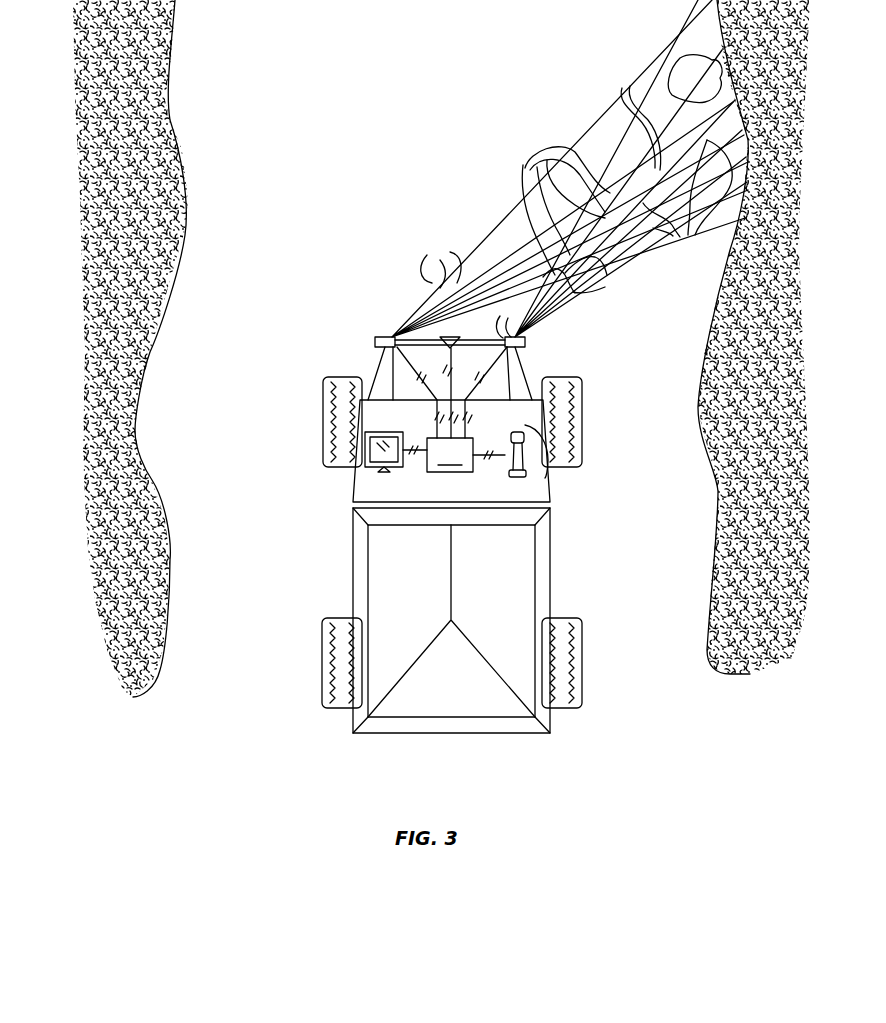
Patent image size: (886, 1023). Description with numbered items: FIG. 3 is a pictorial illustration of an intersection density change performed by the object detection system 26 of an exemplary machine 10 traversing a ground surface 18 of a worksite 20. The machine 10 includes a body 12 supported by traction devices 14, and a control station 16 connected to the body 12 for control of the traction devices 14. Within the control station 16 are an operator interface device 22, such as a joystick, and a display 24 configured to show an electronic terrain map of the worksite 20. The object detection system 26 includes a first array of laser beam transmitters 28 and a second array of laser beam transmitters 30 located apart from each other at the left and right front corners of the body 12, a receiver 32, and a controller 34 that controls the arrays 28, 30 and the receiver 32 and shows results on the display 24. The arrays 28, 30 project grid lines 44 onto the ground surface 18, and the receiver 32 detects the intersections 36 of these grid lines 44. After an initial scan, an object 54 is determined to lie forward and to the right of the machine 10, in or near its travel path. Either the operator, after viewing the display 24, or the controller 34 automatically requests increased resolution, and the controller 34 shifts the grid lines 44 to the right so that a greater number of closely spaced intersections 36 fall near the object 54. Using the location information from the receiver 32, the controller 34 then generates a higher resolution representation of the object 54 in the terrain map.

The machine 10 is at (435, 540).
The body 12 is at (550, 550).
The traction devices 14 is at (562, 415).
The control station 16 is at (546, 478).
The ground surface 18 is at (392, 170).
The worksite 20 is at (54, 310).
The operator interface device 22 is at (520, 480).
The display 24 is at (383, 474).
The object detection system 26 is at (438, 334).
The first array of laser beam transmitters 28 is at (375, 342).
The second array of laser beam transmitters 30 is at (527, 341).
The receiver 32 is at (456, 347).
The controller 34 is at (452, 409).
The intersections 36 is at (627, 183).
The grid lines 44 is at (570, 169).
The object 54 is at (707, 90).